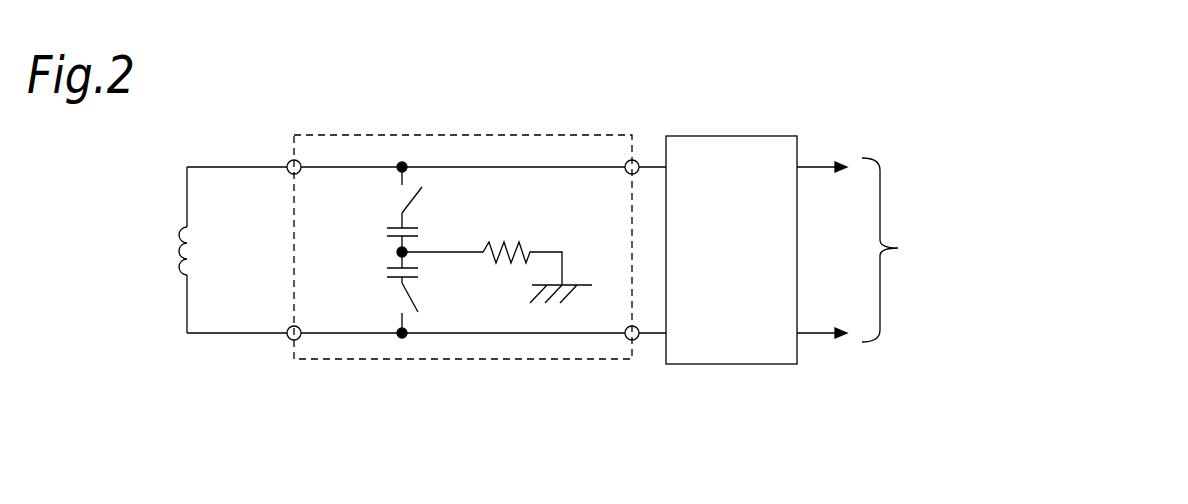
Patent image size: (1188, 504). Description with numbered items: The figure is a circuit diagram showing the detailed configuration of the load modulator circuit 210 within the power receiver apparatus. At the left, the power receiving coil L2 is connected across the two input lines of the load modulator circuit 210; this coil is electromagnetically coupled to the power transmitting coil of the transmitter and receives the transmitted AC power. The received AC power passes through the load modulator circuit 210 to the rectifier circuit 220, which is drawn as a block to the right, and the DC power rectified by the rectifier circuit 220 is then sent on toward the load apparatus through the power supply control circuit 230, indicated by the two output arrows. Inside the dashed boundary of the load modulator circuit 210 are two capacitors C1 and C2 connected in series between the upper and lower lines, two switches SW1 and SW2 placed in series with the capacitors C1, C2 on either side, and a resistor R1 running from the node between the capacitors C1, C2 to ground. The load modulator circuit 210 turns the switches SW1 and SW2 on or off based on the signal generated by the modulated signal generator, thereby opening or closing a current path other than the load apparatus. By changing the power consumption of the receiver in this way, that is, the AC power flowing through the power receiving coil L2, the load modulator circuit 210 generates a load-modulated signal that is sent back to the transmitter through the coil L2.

The load modulator circuit 210 is at (380, 98).
The rectifier circuit 220 is at (702, 364).
The power supply control circuit 230 is at (984, 250).
The power receiving coil L2 is at (173, 268).
The capacitor C1 is at (395, 227).
The capacitor C2 is at (397, 280).
The switch SW1 is at (412, 200).
The switch SW2 is at (415, 307).
The resistor R1 is at (522, 245).